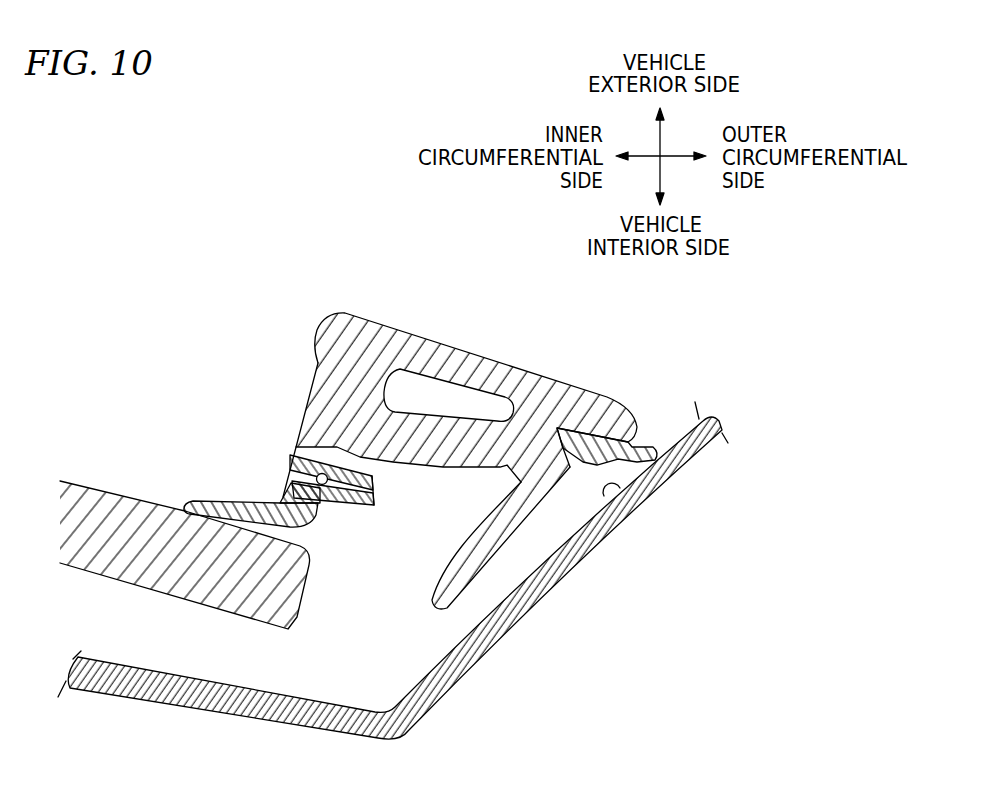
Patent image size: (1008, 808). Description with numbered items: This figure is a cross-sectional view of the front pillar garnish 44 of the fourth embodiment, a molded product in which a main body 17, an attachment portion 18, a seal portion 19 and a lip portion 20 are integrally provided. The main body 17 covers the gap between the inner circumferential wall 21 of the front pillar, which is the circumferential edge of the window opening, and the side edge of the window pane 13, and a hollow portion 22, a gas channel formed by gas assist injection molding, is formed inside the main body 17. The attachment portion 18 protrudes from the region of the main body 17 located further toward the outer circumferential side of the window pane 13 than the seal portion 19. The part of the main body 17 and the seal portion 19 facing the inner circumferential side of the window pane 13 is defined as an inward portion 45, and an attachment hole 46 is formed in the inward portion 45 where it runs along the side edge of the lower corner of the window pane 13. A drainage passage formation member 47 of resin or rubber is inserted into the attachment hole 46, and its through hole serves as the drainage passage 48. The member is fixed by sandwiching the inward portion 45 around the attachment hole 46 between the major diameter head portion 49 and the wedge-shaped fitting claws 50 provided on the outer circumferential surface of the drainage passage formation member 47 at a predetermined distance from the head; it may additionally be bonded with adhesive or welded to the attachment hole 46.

The window pane 13 is at (110, 492).
The main body 17 is at (435, 368).
The attachment portion 18 is at (460, 580).
The seal portion 19 is at (193, 500).
The lip portion 20 is at (655, 445).
The inner circumferential wall 21 is at (617, 487).
The hollow portion 22 is at (448, 397).
The front pillar garnish 44 is at (483, 352).
The inward portion 45 is at (307, 402).
The attachment hole 46 is at (330, 492).
The drainage passage formation member 47 is at (298, 449).
The drainage passage 48 is at (282, 465).
The major diameter head portion 49 is at (300, 433).
The fitting claws 50 is at (355, 460).